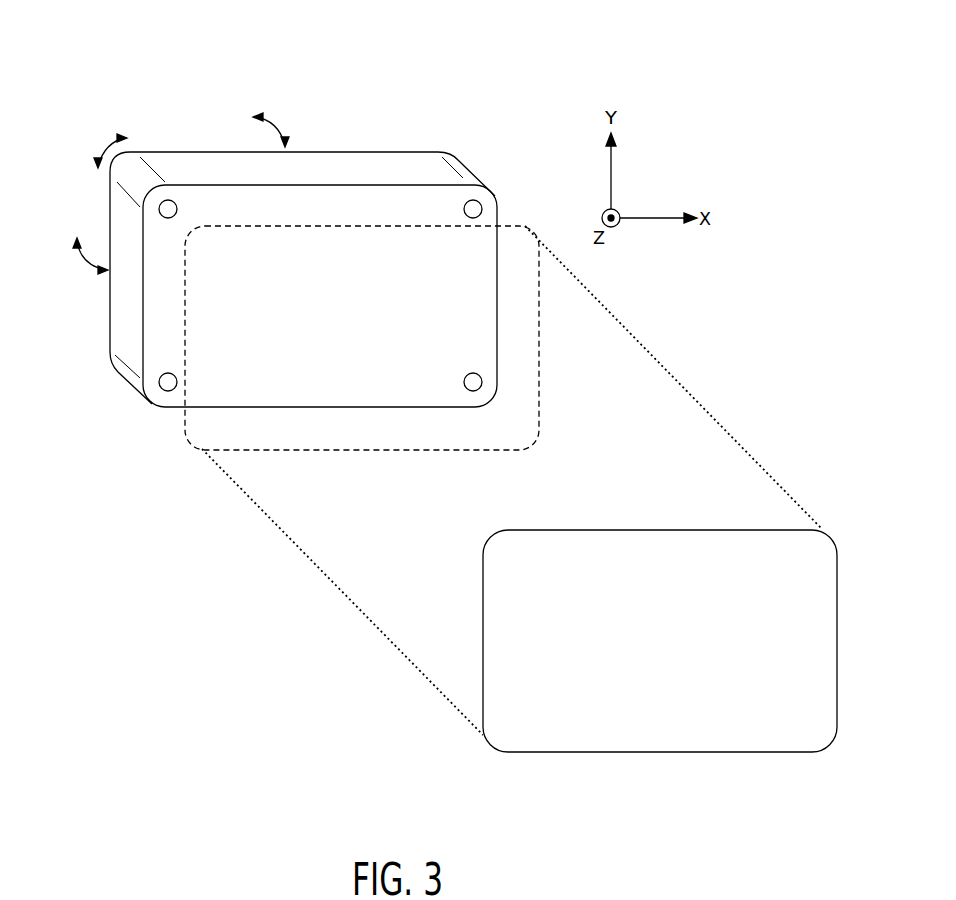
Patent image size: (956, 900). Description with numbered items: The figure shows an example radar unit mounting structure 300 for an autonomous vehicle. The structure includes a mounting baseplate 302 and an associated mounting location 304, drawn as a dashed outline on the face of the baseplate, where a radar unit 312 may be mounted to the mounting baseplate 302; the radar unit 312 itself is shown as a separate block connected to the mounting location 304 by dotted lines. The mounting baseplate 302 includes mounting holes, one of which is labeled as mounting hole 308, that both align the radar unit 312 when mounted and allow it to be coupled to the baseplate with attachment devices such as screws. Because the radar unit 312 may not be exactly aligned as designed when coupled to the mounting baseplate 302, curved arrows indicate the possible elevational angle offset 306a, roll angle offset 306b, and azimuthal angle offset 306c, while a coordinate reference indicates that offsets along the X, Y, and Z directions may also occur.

The radar unit mounting structure 300 is at (211, 63).
The mounting baseplate 302 is at (463, 171).
The mounting location 304 is at (527, 226).
The elevational angle offset 306a is at (280, 124).
The roll angle offset 306b is at (103, 143).
The azimuthal angle offset 306c is at (85, 267).
The mounting hole 308 is at (167, 373).
The radar unit 312 is at (745, 652).